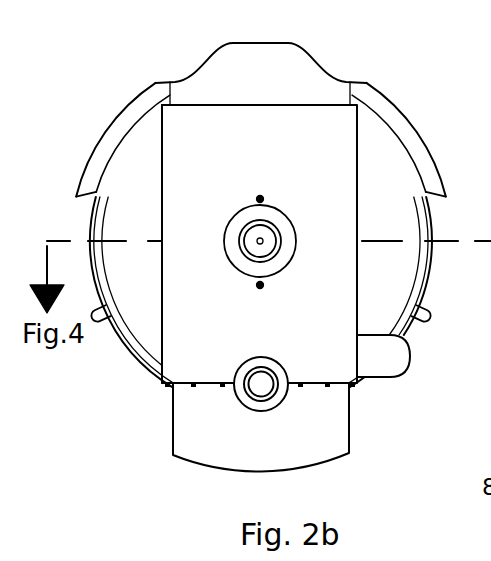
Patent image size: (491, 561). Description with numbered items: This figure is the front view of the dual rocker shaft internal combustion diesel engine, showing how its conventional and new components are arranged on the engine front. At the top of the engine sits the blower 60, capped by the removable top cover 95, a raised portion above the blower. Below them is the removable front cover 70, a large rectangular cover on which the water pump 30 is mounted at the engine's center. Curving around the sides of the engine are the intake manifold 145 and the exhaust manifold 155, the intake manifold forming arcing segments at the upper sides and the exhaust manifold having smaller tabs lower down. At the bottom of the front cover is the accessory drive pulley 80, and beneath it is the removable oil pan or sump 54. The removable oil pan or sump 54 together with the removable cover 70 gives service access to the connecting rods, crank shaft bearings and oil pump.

The water pump 30 is at (280, 226).
The removable oil pan or sump 54 is at (348, 440).
The blower 60 is at (276, 88).
The removable front cover 70 is at (226, 166).
The accessory drive pulley 80 is at (244, 401).
The removable top cover 95 is at (279, 48).
The intake manifold 145 is at (396, 105).
The exhaust manifold 155 is at (95, 321).